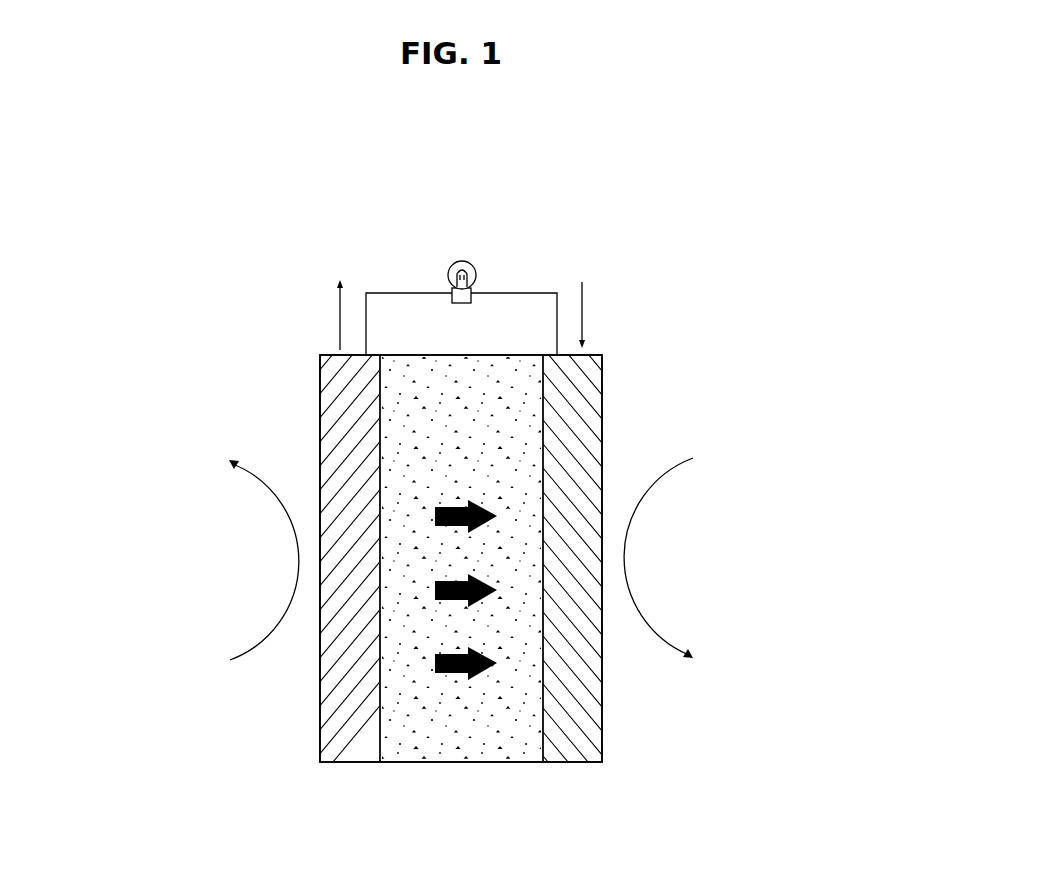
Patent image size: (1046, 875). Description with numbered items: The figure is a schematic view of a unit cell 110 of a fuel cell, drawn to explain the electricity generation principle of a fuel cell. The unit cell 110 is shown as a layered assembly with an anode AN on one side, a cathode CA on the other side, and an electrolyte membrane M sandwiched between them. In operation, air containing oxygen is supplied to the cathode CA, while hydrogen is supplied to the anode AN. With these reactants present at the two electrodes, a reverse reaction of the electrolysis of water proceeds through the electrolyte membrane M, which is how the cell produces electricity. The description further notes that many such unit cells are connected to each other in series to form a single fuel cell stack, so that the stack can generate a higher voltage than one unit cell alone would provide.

The electrolysis cell (membrane electrode assembly) 110 is at (257, 176).
The anode AN is at (352, 748).
The electrolyte membrane M is at (457, 748).
The cathode CA is at (571, 748).